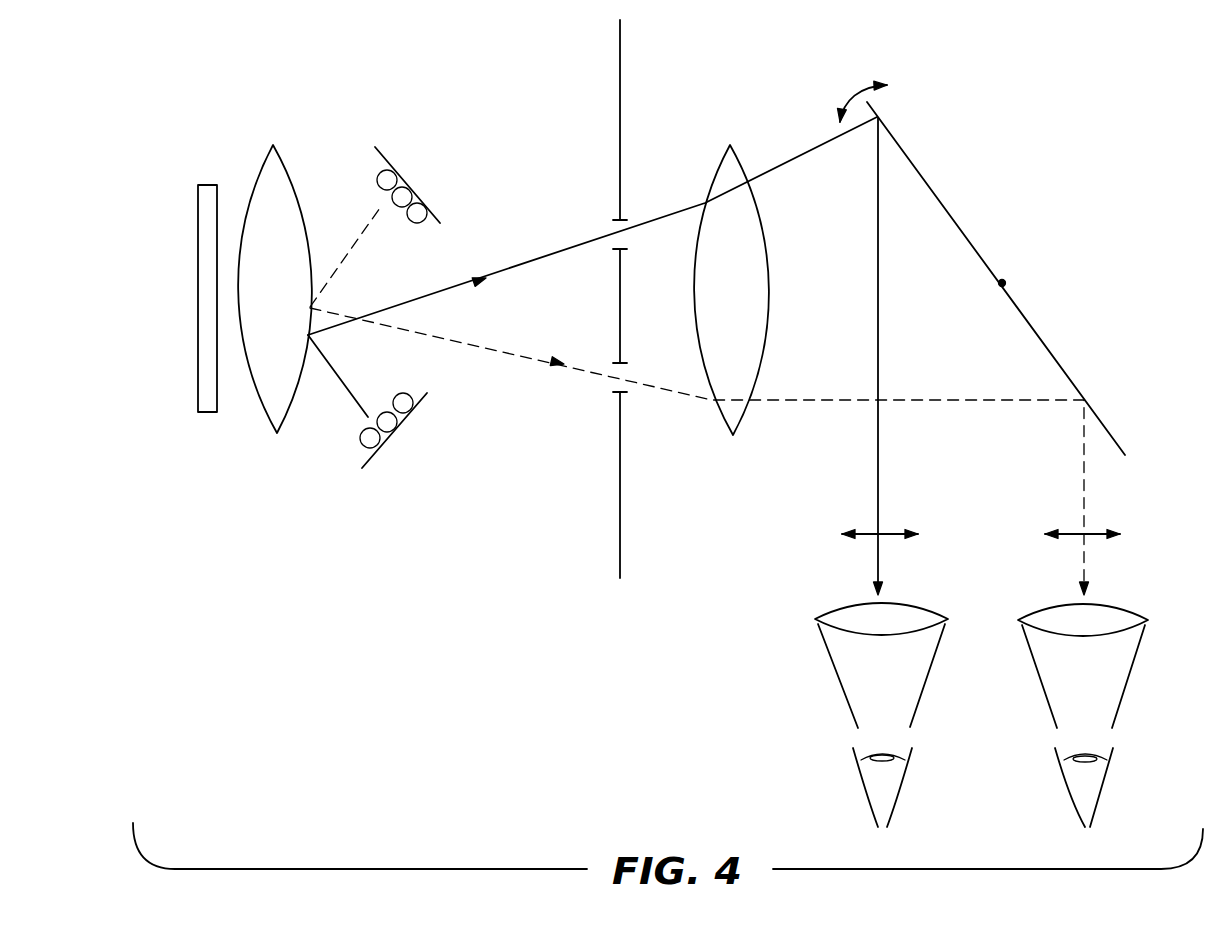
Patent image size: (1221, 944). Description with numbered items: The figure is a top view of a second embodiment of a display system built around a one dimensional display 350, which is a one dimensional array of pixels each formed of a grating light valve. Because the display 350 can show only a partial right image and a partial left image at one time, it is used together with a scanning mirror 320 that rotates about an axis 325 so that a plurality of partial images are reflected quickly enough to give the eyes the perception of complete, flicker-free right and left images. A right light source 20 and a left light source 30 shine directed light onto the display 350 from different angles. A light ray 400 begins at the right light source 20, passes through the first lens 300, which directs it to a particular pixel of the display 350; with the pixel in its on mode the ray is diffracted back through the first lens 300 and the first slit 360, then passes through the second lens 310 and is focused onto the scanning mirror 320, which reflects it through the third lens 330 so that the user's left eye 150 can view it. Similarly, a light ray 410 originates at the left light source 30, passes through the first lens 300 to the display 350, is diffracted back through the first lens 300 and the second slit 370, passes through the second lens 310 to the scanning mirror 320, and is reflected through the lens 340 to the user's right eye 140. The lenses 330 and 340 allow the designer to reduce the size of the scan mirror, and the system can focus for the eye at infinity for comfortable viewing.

The right light source 20 is at (392, 443).
The left light source 30 is at (404, 170).
The user's right eye 140 is at (1093, 792).
The user's left eye 150 is at (890, 792).
The first lens 300 is at (286, 164).
The second lens 310 is at (768, 262).
The scanning mirror 320 is at (965, 229).
The axis 325 is at (1005, 283).
The third lens 330 is at (820, 618).
The third lens 340 is at (1141, 612).
The one dimensional display 350 is at (198, 201).
The first slit 360 is at (620, 205).
The second slit 370 is at (621, 402).
The light ray 400 is at (553, 252).
The light ray 410 is at (504, 347).